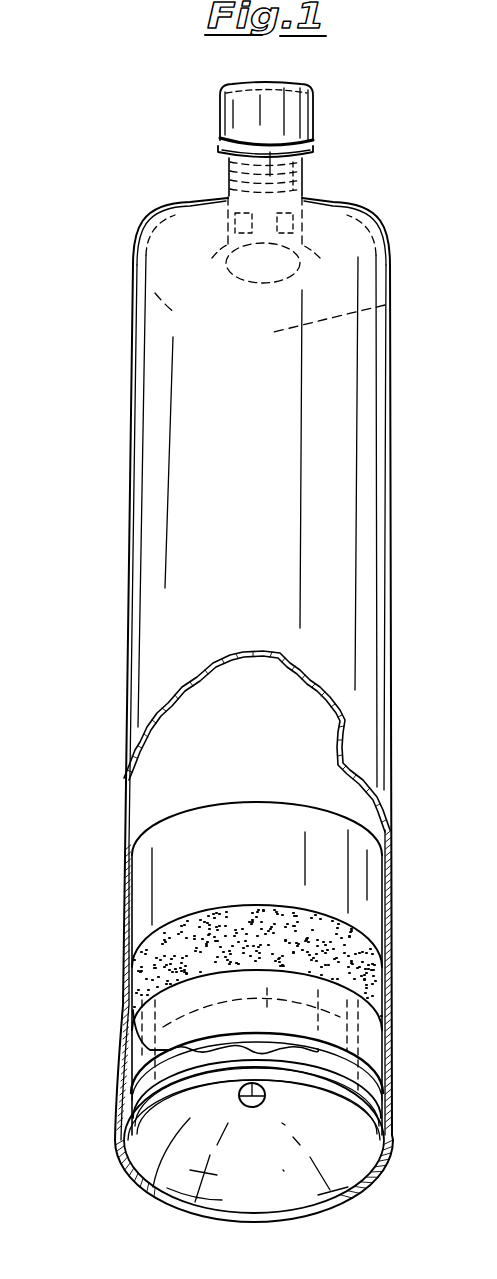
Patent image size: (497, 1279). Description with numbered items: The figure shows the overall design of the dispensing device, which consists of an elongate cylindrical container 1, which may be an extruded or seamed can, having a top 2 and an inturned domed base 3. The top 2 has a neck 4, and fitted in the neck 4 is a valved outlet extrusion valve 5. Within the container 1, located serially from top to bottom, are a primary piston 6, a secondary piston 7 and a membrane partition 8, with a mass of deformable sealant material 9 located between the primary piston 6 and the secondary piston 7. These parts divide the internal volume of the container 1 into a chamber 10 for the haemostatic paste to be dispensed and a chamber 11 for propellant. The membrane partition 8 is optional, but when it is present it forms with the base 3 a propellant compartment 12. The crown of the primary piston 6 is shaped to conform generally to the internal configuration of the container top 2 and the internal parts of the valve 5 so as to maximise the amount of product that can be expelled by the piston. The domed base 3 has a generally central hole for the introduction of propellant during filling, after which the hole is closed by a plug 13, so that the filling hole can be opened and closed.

The elongate cylindrical container 1 is at (106, 677).
The top 2 is at (385, 305).
The inturned domed base 3 is at (357, 1173).
The neck 4 is at (305, 186).
The valved outlet extrusion valve 5 is at (314, 120).
The primary piston 6 is at (362, 898).
The secondary piston 7 is at (362, 1020).
The membrane partition 8 is at (353, 1049).
The deformable sealant material 9 is at (363, 972).
The chamber for the haemostatic paste 10 is at (265, 743).
The chamber for propellant 11 is at (373, 1077).
The propellant compartment 12 is at (259, 1045).
The plug 13 is at (250, 1107).